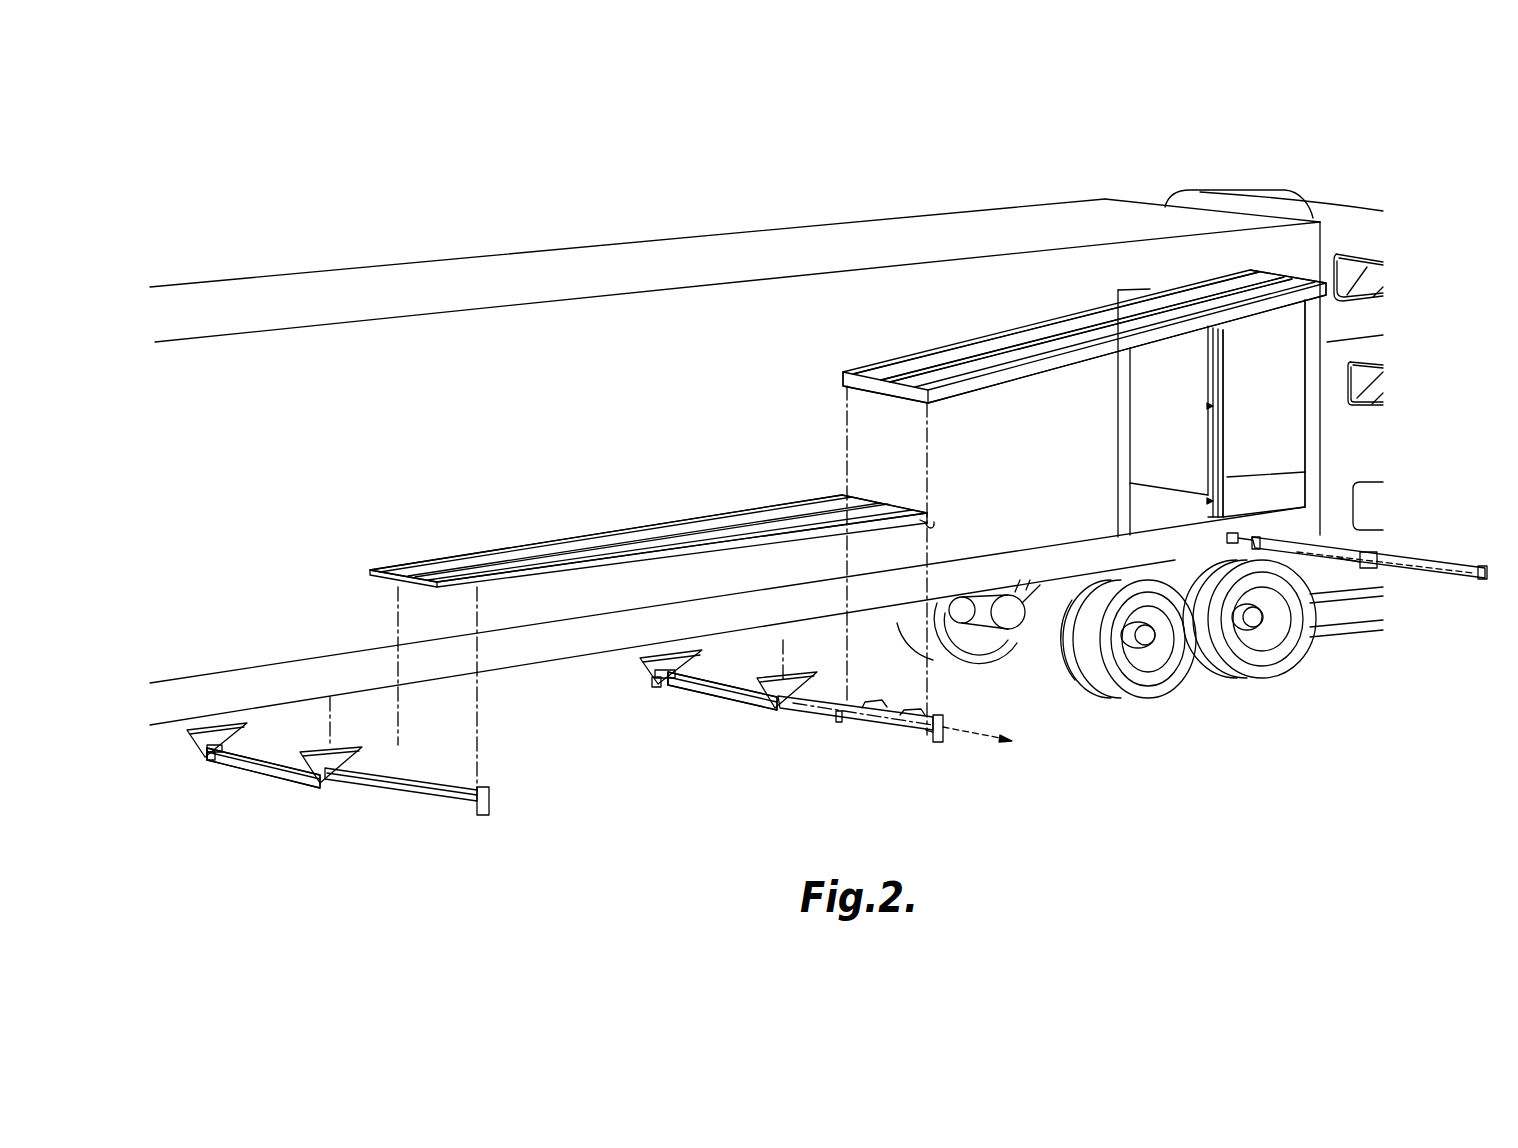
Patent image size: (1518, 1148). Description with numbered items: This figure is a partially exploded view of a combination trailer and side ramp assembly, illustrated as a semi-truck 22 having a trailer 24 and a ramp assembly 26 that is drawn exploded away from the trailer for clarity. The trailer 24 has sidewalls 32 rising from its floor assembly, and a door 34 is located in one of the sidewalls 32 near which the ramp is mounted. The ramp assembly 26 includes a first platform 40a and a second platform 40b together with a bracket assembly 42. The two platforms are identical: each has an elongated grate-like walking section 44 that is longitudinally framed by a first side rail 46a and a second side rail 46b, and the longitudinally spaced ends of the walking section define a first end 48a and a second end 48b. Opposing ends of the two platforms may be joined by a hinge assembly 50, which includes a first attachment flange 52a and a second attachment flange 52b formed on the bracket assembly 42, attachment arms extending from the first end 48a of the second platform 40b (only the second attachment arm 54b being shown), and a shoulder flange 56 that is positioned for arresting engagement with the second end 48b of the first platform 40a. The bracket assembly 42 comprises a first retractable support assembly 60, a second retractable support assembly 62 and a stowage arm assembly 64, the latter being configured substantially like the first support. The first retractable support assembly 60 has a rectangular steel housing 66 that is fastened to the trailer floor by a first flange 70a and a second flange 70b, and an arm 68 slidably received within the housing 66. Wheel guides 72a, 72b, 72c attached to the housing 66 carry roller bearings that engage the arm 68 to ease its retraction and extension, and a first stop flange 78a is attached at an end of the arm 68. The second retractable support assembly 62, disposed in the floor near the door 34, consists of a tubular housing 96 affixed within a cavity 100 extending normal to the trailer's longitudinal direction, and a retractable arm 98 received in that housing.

The semi-truck 22 is at (1283, 176).
The trailer 24 is at (680, 240).
The ramp assembly 26 is at (613, 485).
The sidewalls 32 is at (452, 320).
The door 34 is at (1290, 452).
The first platform 40a is at (1057, 310).
The second platform 40b is at (490, 545).
The bracket assembly 42 is at (577, 737).
The walking section 44 is at (1210, 296).
The first side rail 46a is at (990, 332).
The second side rail 46b is at (1005, 379).
The first end 48a is at (1290, 278).
The second end 48b is at (878, 380).
The hinge assembly 50 is at (940, 525).
The first attachment flange 52a is at (837, 718).
The second attachment flange 52b is at (928, 737).
The second attachment arm 54b is at (925, 528).
The shoulder flange 56 is at (877, 700).
The first retractable support assembly 60 is at (733, 708).
The second retractable support assembly 62 is at (1378, 572).
The stowage arm assembly 64 is at (276, 780).
The housing 66 is at (727, 683).
The arm 68 is at (875, 727).
The first flange 70a is at (803, 670).
The second flange 70b is at (640, 657).
The wheel guide 72a is at (668, 675).
The wheel guide 72b is at (657, 689).
The wheel guide 72c is at (670, 688).
The first stop flange 78a is at (943, 720).
The tubular housing 96 is at (1340, 563).
The retractable arm 98 is at (1440, 562).
The cavity 100 is at (1240, 536).